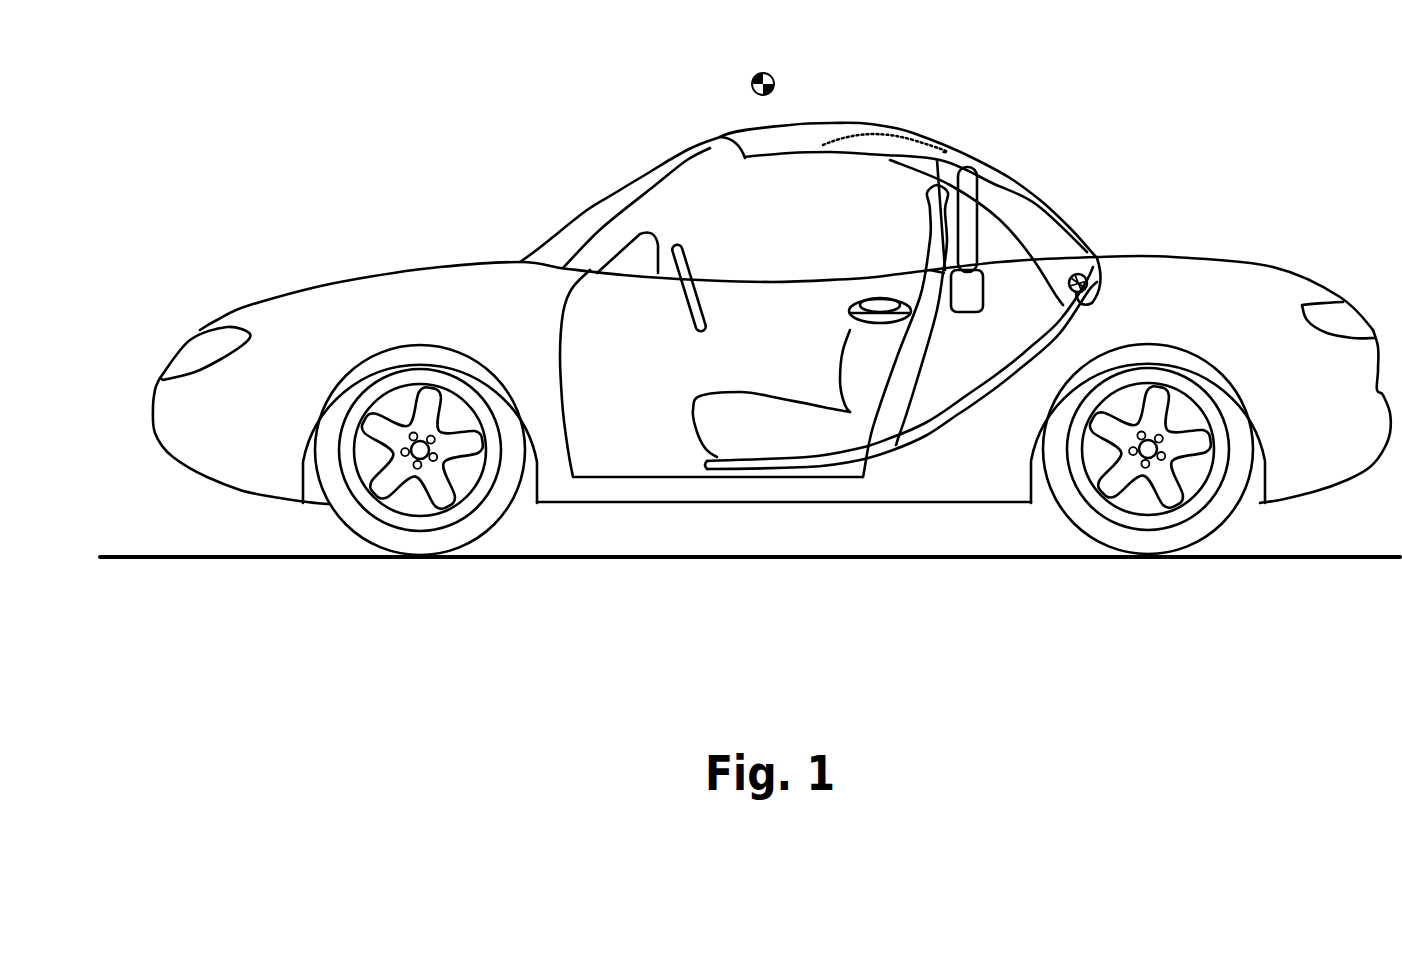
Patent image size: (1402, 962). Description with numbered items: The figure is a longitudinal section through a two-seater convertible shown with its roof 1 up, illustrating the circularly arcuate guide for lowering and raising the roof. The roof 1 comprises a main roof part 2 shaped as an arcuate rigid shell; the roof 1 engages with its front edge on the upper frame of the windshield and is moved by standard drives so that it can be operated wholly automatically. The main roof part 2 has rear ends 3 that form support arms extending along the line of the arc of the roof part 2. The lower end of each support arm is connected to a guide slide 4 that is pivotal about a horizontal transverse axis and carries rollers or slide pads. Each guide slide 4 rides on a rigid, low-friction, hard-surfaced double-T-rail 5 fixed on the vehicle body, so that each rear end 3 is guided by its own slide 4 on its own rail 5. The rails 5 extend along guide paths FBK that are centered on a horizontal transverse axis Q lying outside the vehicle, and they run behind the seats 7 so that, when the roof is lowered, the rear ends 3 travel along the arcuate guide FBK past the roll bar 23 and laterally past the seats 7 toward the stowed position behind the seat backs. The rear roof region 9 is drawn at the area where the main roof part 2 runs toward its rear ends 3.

The roof 1 is at (830, 123).
The main roof part 2 is at (885, 152).
The rear ends 3 is at (1100, 278).
The guide slide 4 is at (1105, 288).
The double-T-rail 5 is at (1029, 351).
The seat 7 is at (852, 328).
The rear roof part 9 is at (1037, 200).
The roll bar 23 is at (970, 212).
The horizontal transverse axis Q is at (737, 82).
The guide path FBK is at (933, 437).